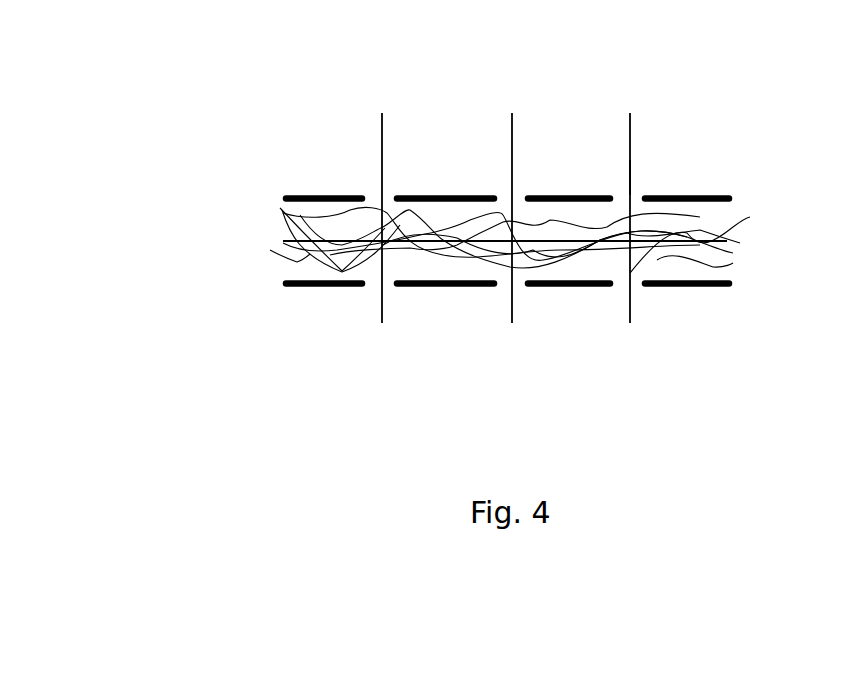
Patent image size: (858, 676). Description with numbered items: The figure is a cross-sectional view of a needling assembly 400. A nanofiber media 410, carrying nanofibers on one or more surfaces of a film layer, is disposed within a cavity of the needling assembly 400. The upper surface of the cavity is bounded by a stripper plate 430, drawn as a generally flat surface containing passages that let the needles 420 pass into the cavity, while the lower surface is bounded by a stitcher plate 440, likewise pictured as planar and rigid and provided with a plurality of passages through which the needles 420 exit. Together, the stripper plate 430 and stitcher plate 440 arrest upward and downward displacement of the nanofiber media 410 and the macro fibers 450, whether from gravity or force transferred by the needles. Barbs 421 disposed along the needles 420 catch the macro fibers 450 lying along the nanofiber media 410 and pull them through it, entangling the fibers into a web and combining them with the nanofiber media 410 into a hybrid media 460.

The needling assembly 400 is at (231, 151).
The nanofiber media 410 is at (723, 240).
The needles 420 is at (632, 120).
The barbs 421 is at (627, 172).
The stripper plate 430 is at (733, 197).
The stitcher plate 440 is at (728, 284).
The macro fibers 450 is at (272, 250).
The hybrid media 460 is at (245, 245).